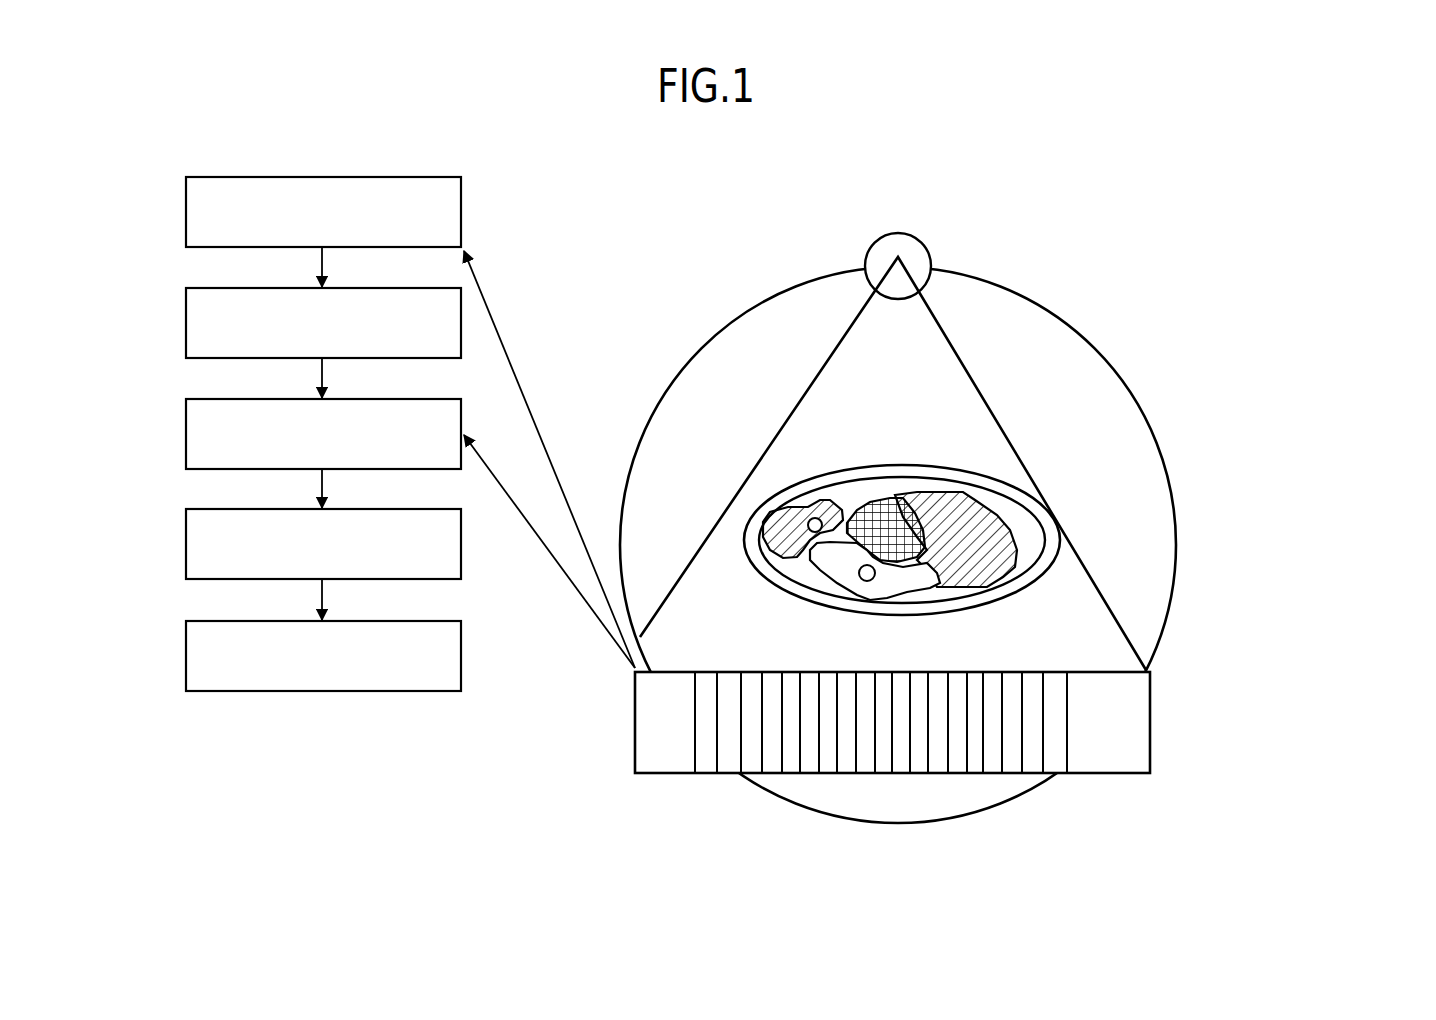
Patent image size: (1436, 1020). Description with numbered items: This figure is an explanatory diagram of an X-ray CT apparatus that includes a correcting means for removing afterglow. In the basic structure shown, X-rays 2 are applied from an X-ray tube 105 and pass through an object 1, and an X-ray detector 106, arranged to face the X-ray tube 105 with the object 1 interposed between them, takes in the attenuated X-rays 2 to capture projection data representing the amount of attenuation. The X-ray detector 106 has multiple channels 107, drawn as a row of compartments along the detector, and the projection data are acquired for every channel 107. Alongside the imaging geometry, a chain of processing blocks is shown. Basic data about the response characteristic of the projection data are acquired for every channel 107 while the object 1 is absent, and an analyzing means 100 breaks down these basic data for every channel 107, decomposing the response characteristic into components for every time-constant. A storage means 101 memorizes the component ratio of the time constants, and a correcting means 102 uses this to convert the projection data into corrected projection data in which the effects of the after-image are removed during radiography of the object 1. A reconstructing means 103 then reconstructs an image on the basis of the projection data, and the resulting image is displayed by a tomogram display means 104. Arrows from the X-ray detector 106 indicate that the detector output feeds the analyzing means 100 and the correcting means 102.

The analyzing means 100 is at (186, 212).
The storage means 101 is at (186, 323).
The correcting means 102 is at (186, 434).
The reconstructing means 103 is at (186, 544).
The tomogram display means 104 is at (186, 655).
The X-ray tube 105 is at (905, 248).
The X-rays 2 is at (930, 378).
The object 1 is at (940, 515).
The X-ray detector 106 is at (1150, 753).
The channel 107 is at (912, 752).